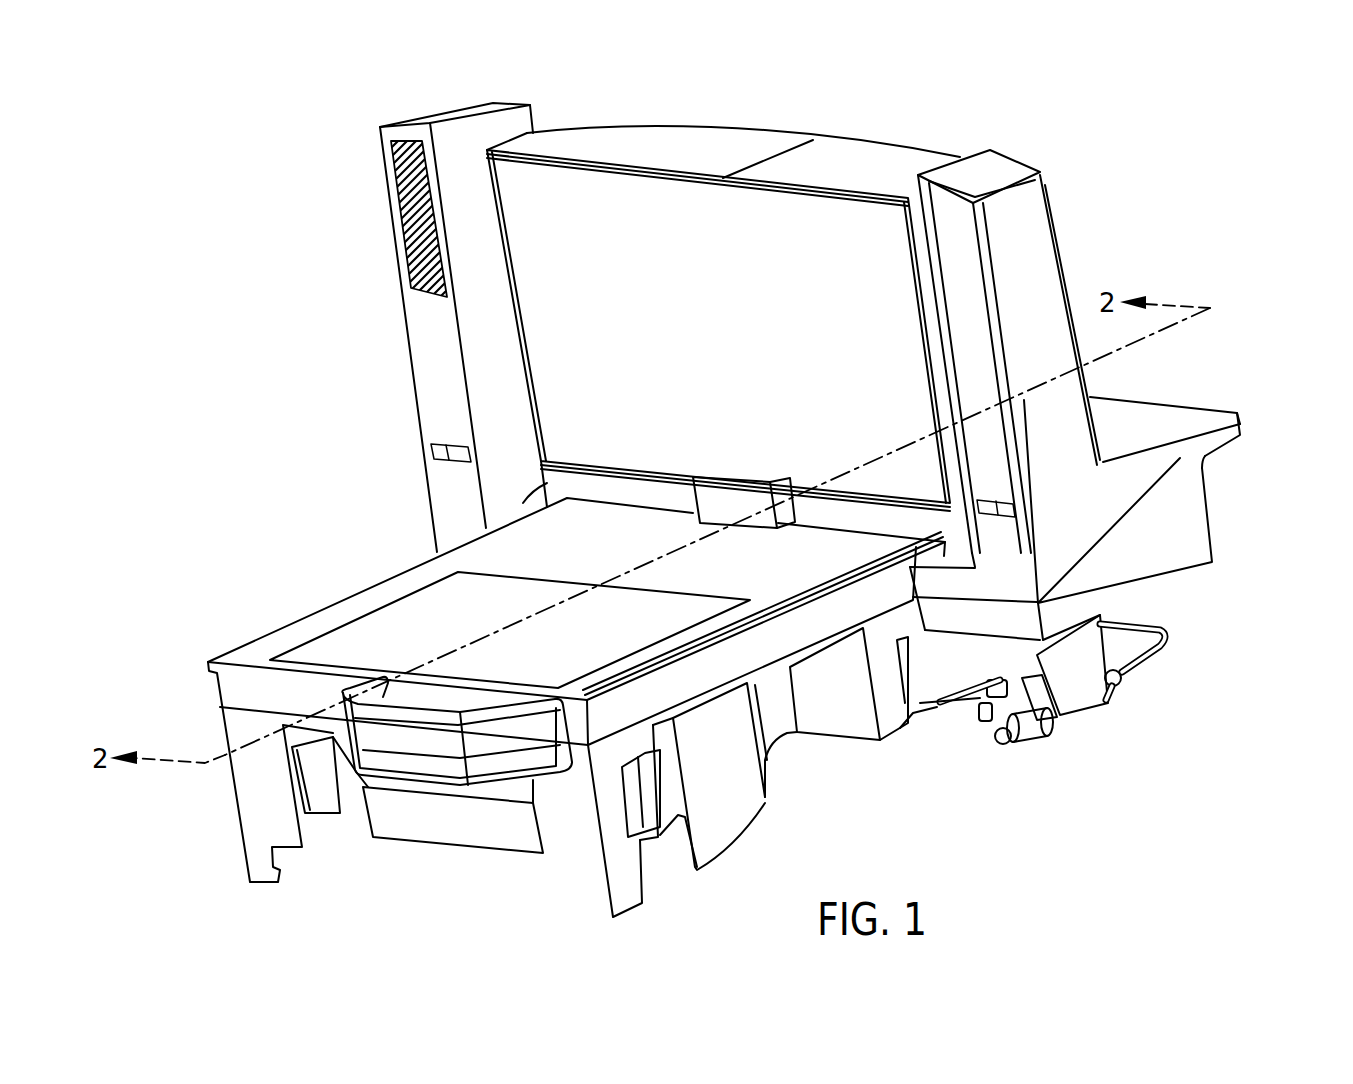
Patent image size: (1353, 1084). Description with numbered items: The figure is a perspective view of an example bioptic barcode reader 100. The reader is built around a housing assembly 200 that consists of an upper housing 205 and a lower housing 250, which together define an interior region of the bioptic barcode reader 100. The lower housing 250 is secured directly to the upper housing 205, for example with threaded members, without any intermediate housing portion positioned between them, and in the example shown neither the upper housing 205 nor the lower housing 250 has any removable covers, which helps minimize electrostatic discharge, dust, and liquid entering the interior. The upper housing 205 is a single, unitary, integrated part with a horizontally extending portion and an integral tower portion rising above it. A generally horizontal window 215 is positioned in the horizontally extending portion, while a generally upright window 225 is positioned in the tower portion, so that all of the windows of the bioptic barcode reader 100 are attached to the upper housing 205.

The bioptic barcode reader 100 is at (310, 99).
The housing assembly 200 is at (407, 537).
The upper housing 205 is at (1145, 458).
The horizontal window 215 is at (357, 640).
The upright window 225 is at (553, 348).
The lower housing 250 is at (1145, 562).